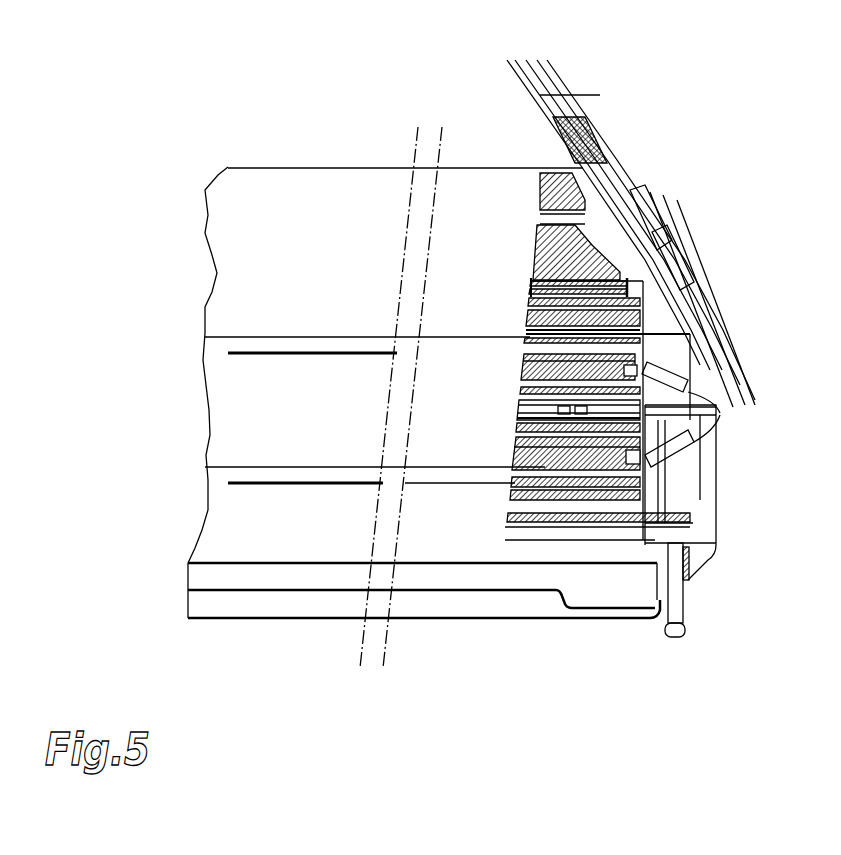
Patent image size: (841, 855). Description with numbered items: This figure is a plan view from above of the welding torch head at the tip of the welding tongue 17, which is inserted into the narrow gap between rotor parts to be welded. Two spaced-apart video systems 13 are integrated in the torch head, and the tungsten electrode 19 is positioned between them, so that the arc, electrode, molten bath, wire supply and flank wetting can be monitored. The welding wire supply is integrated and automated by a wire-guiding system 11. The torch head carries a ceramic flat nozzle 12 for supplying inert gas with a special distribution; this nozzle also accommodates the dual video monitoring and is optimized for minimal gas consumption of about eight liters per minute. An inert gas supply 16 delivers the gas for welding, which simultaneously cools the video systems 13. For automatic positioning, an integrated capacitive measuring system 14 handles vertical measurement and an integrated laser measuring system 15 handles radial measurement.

The wire-guiding system 11 is at (583, 113).
The ceramic flat nozzle 12 is at (700, 527).
The video systems 13 is at (756, 415).
The capacitive measuring system 14 is at (643, 600).
The laser measuring system 15 is at (677, 570).
The inert gas supply 16 is at (522, 498).
The welding tongue 17 is at (473, 232).
The tungsten electrode 19 is at (717, 413).